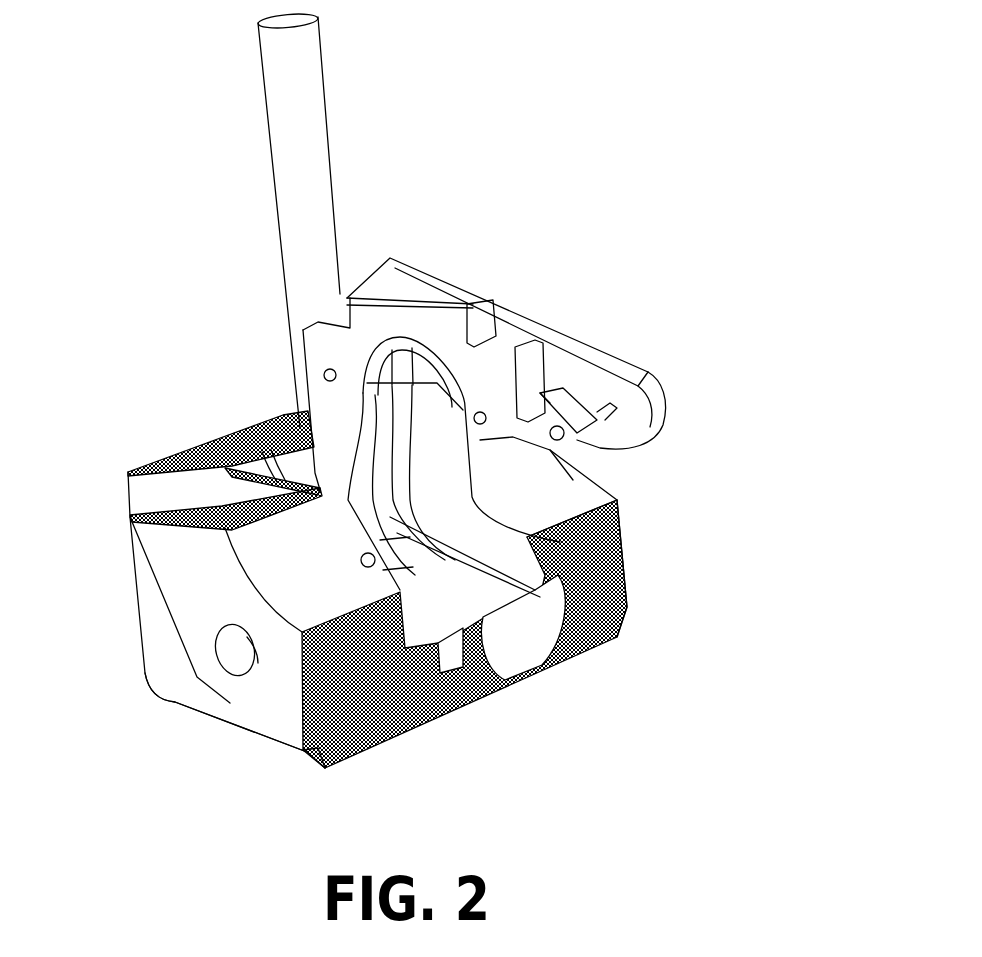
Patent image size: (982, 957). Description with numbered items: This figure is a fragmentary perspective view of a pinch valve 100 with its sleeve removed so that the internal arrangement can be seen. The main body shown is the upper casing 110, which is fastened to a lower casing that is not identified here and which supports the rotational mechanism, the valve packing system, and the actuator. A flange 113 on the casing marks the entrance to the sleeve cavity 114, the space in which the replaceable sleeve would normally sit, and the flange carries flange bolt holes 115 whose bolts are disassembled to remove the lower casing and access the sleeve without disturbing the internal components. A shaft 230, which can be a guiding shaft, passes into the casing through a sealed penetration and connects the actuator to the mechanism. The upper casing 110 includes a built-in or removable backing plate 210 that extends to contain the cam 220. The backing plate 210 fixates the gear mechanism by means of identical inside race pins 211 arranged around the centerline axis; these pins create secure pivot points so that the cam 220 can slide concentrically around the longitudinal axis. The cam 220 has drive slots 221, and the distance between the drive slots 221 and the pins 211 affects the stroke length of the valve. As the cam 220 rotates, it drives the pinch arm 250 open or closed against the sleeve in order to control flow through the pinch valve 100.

The pinch valve 100 is at (695, 137).
The upper casing 110 is at (163, 672).
The flange 113 is at (263, 700).
The sleeve cavity 114 is at (518, 524).
The flange bolt holes 115 is at (230, 655).
The backing plate 210 is at (450, 328).
The inside race pins 211 is at (325, 375).
The cam 220 is at (583, 378).
The drive slots 221 is at (608, 413).
The shaft 230 is at (310, 95).
The pinch arm 250 is at (418, 372).